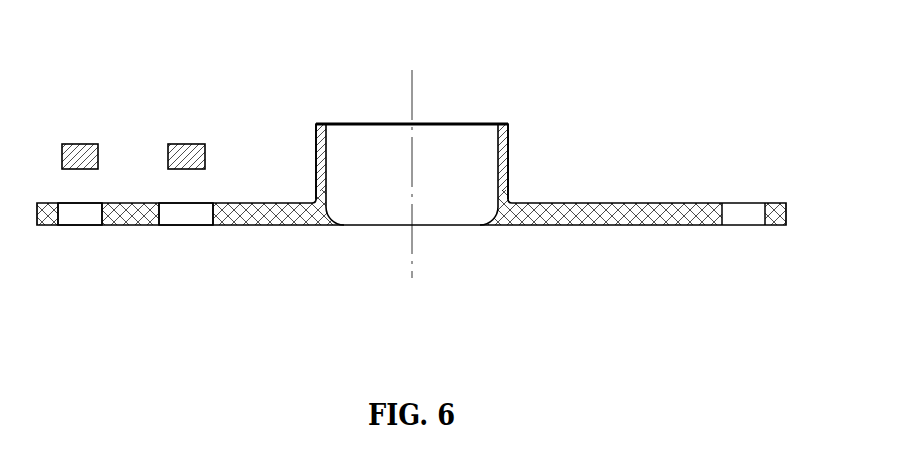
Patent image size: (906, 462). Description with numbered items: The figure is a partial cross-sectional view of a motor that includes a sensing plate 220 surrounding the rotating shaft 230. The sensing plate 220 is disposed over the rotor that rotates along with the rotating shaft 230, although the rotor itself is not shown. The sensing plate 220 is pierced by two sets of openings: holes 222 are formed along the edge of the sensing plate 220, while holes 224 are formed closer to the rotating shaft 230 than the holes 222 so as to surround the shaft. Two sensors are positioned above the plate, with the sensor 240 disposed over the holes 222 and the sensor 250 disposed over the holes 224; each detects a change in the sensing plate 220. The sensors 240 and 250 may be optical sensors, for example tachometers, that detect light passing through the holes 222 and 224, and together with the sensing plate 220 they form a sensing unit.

The sensing plate 220 is at (580, 226).
The holes 222 is at (80, 226).
The holes 224 is at (195, 226).
The rotating shaft 230 is at (468, 128).
The sensor 240 is at (82, 143).
The sensor 250 is at (188, 143).